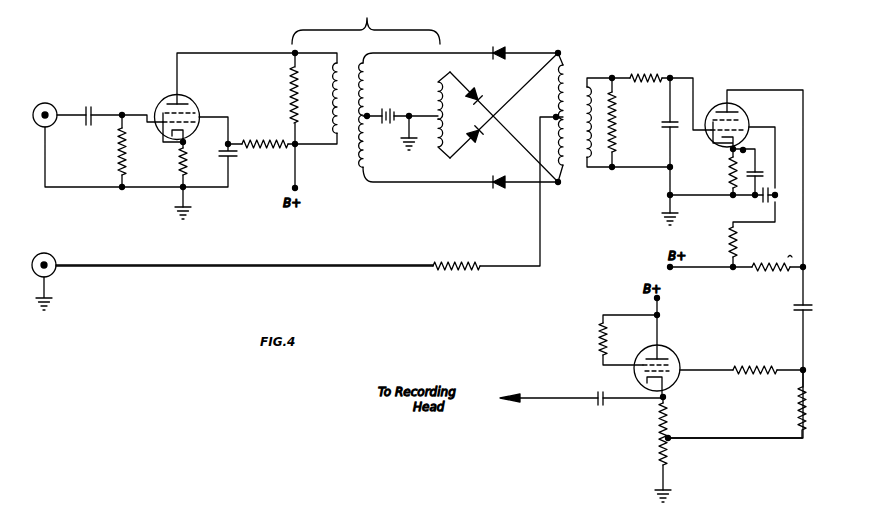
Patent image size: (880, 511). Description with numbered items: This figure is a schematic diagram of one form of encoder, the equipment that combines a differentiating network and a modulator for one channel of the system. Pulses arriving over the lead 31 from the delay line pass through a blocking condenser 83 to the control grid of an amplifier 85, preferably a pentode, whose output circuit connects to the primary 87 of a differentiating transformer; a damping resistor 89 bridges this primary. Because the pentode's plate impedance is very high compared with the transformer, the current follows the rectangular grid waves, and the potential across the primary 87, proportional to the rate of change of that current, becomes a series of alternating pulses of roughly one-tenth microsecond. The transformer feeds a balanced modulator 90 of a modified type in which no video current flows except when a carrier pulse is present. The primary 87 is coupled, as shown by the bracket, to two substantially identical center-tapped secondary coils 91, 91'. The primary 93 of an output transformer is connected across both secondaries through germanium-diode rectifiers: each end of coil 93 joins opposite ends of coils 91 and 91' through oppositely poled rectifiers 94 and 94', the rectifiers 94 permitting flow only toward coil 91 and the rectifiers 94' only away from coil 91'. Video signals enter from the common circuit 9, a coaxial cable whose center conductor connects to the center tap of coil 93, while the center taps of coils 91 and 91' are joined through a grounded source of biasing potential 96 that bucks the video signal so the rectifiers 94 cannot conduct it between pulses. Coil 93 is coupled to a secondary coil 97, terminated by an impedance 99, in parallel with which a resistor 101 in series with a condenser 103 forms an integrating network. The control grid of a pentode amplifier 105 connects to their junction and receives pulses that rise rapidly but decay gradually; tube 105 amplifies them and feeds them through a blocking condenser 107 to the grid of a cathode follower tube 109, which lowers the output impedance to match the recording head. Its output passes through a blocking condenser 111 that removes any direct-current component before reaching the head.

The common circuit 9 is at (164, 274).
The lead 31 is at (78, 100).
The blocking condenser 83 is at (93, 110).
The amplifier 85 is at (197, 102).
The primary of differentiating transformer 87 is at (335, 94).
The damping resistor 89 is at (289, 92).
The balanced modulator 90 is at (504, 117).
The center tapped secondary coil 91 is at (404, 115).
The center tapped secondary coil 91' is at (432, 145).
The primary of output transformer 93 is at (556, 97).
The rectifier 94 is at (495, 117).
The rectifier 94' is at (485, 116).
The source of biasing potential 96 is at (392, 106).
The secondary coil 97 is at (592, 83).
The terminating impedance 99 is at (622, 113).
The resistor 101 is at (643, 57).
The condenser 103 is at (658, 136).
The pentode amplifier 105 is at (742, 112).
The coupling capacitor 107 is at (798, 307).
The cathode follower tube 109 is at (670, 352).
The blocking condenser 111 is at (594, 413).